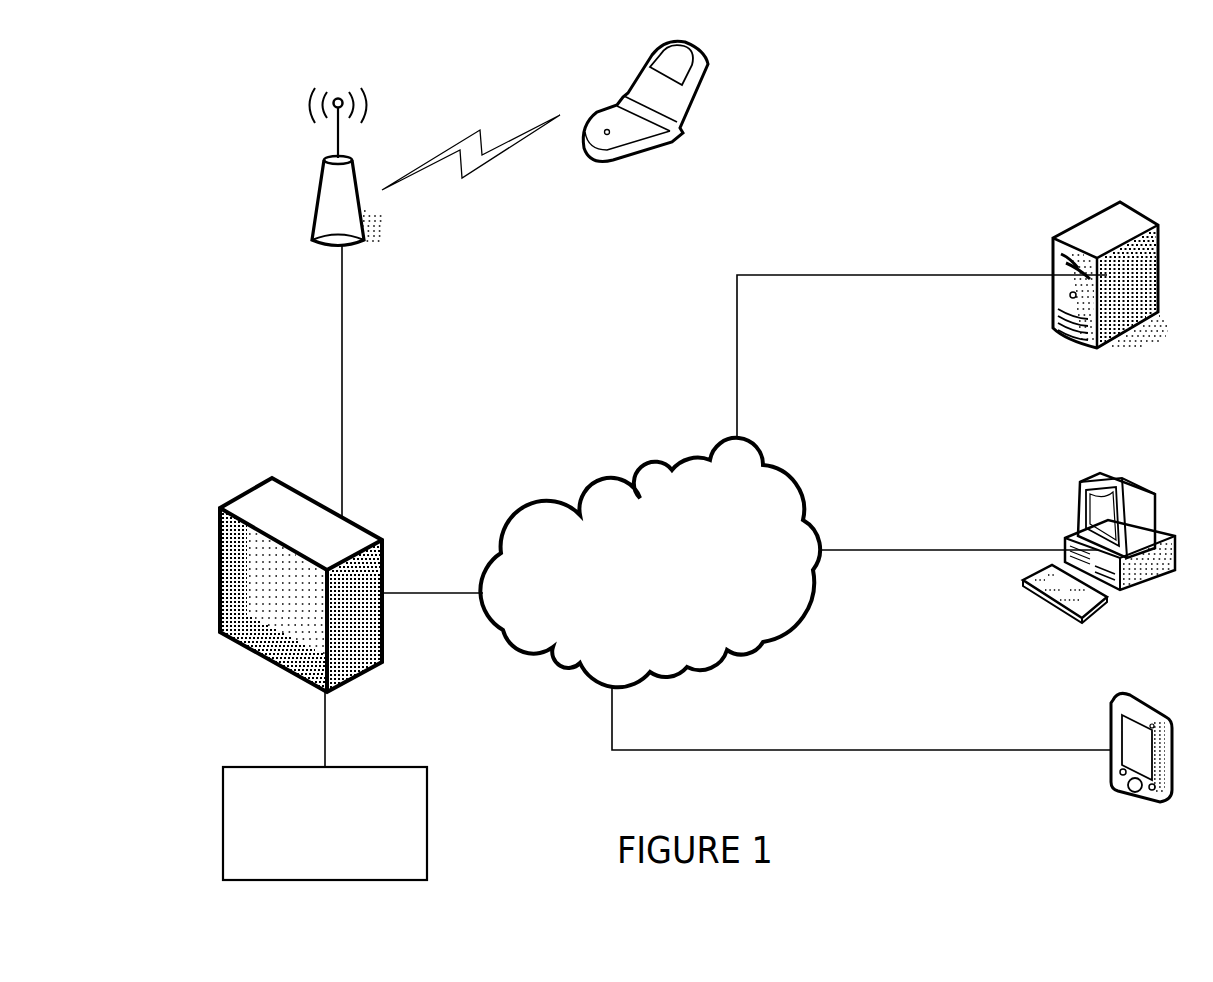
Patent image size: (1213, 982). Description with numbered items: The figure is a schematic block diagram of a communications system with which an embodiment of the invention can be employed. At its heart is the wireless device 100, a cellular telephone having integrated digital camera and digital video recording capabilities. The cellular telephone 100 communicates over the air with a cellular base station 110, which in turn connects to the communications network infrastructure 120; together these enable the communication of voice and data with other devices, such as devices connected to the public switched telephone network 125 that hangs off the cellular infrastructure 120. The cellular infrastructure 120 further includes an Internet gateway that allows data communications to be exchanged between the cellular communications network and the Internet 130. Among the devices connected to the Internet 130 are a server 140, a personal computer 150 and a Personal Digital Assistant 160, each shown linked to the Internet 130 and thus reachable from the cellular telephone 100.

The wireless device 100 is at (545, 115).
The cellular base station 110 is at (316, 302).
The communications network infrastructure 120 is at (351, 622).
The public switched telephone network 125 is at (325, 823).
The Internet 130 is at (795, 512).
The server 140 is at (1112, 294).
The personal computer 150 is at (1099, 552).
The Personal Digital Assistant 160 is at (1141, 763).